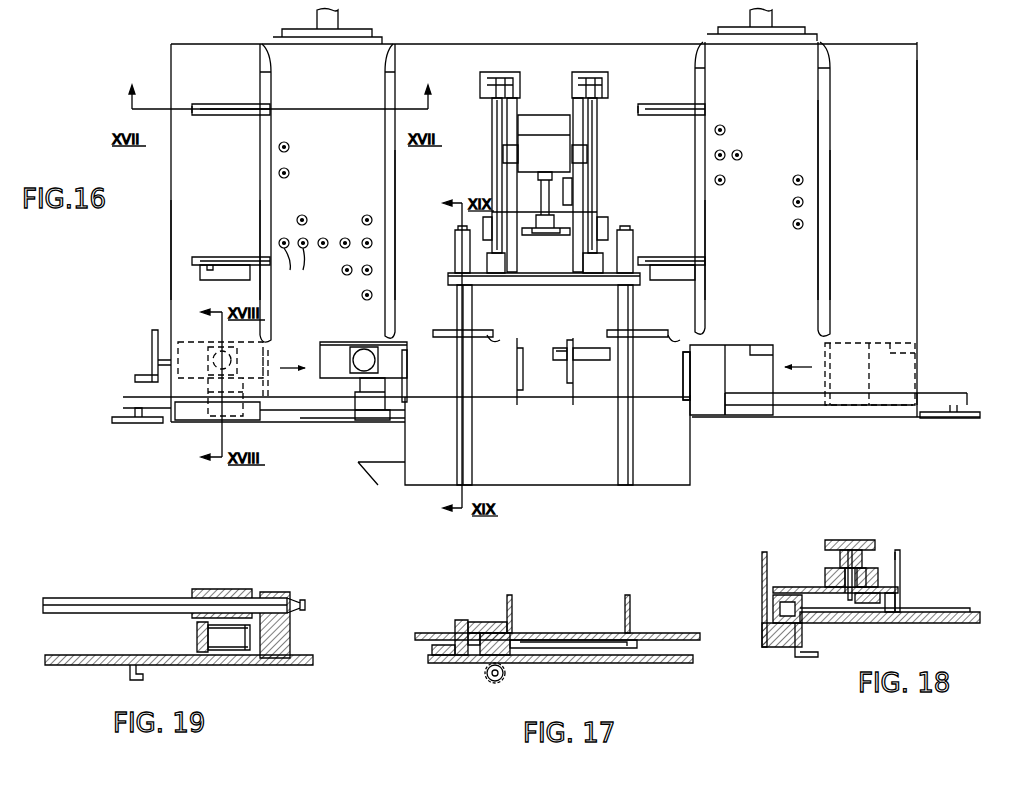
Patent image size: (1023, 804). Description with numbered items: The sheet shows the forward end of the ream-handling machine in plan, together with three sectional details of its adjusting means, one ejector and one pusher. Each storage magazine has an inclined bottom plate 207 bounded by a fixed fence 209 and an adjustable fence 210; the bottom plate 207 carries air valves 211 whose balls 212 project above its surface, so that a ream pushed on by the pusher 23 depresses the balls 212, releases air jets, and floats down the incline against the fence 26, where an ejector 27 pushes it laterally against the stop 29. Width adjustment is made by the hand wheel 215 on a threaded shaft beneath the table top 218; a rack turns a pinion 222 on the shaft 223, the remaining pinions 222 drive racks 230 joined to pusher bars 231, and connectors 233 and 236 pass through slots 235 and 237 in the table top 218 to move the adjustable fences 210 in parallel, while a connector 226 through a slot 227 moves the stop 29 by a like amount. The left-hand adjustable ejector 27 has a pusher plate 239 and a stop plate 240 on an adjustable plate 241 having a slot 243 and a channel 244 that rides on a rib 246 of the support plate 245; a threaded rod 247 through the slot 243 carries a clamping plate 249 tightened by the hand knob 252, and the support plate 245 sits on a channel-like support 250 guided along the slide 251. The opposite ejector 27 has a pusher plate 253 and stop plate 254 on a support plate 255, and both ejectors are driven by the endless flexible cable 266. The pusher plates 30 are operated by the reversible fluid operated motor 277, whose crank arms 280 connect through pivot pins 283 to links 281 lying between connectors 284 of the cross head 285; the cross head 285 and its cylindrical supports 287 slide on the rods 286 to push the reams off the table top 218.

In FIG. 16, the pusher 23 is at (325, 38).
In FIG. 16, the fence 26 is at (300, 420).
In FIG. 16, the ejector 27 is at (410, 362).
In FIG. 18, the ejector 27 is at (905, 557).
In FIG. 16, the stop 29 is at (516, 366).
In FIG. 16, the pusher plate 30 is at (508, 322).
In FIG. 19, the pusher plate 30 is at (190, 652).
In FIG. 16, the bottom plate 207 is at (285, 200).
In FIG. 16, the fixed fence 209 is at (398, 262).
In FIG. 16, the adjustable fence 210 is at (265, 228).
In FIG. 16, the air valve 211 is at (323, 243).
In FIG. 16, the ball 212 is at (312, 270).
In FIG. 16, the hand wheel 215 is at (135, 375).
In FIG. 16, the table top 218 is at (343, 392).
In FIG. 17, the pinion 222 is at (505, 675).
In FIG. 17, the shaft 223 is at (493, 683).
In FIG. 16, the connector 226 is at (558, 348).
In FIG. 16, the slot 227 is at (598, 356).
In FIG. 17, the rack 230 is at (460, 663).
In FIG. 17, the pusher bar 231 is at (655, 663).
In FIG. 16, the connector 233 is at (230, 108).
In FIG. 16, the slot 235 is at (196, 104).
In FIG. 16, the connector 236 is at (212, 257).
In FIG. 16, the slot 237 is at (205, 280).
In FIG. 16, the pusher plate 239 is at (407, 390).
In FIG. 16, the stop plate 240 is at (366, 342).
In FIG. 18, the stop plate 240 is at (905, 572).
In FIG. 18, the adjustable plate 241 is at (900, 563).
In FIG. 18, the slot 243 is at (830, 568).
In FIG. 18, the channel 244 is at (848, 593).
In FIG. 18, the support plate 245 is at (800, 587).
In FIG. 18, the rib 246 is at (870, 603).
In FIG. 18, the threaded rod 247 is at (858, 568).
In FIG. 18, the clamping plate 249 is at (868, 570).
In FIG. 18, the channel-like support 250 is at (767, 605).
In FIG. 18, the slide 251 is at (785, 647).
In FIG. 18, the hand knob 252 is at (836, 540).
In FIG. 16, the pusher plate 253 is at (682, 360).
In FIG. 16, the stop plate 254 is at (725, 343).
In FIG. 16, the support plate 255 is at (715, 375).
In FIG. 16, the endless flexible cable 266 is at (928, 418).
In FIG. 16, the reversible fluid operated motor 277 is at (540, 135).
In FIG. 16, the crank arm 280 is at (505, 125).
In FIG. 16, the link 281 is at (495, 178).
In FIG. 16, the pivot pin 283 is at (560, 57).
In FIG. 16, the connector 284 is at (565, 257).
In FIG. 16, the cross head 285 is at (560, 279).
In FIG. 16, the rod 286 is at (472, 468).
In FIG. 19, the rod 286 is at (127, 598).
In FIG. 19, the cylindrical support 287 is at (228, 589).